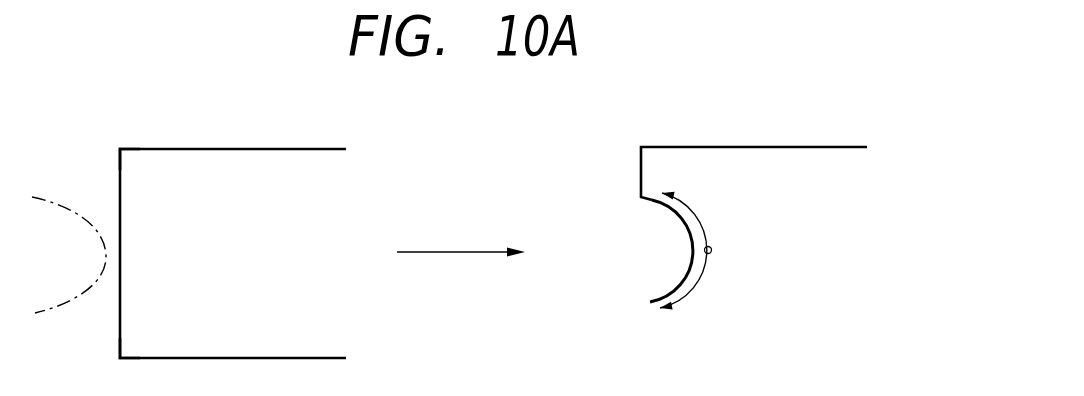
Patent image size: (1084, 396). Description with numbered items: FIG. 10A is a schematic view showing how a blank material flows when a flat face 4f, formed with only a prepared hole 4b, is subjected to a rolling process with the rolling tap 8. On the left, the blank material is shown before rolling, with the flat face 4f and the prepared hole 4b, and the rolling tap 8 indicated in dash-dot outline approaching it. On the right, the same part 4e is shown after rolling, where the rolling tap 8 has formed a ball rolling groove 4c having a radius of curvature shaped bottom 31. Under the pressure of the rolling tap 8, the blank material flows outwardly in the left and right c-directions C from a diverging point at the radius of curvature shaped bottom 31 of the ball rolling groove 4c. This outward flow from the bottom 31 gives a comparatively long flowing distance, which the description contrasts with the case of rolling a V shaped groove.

The part cut in the blank material 4e is at (249, 157).
The flat face 4f is at (118, 168).
The prepared hole 4b is at (118, 318).
The rolling tap 8 is at (70, 198).
The ball rolling groove 4c is at (667, 212).
The radius of curvature shaped bottom 31 is at (697, 252).
The c-directions C is at (689, 253).